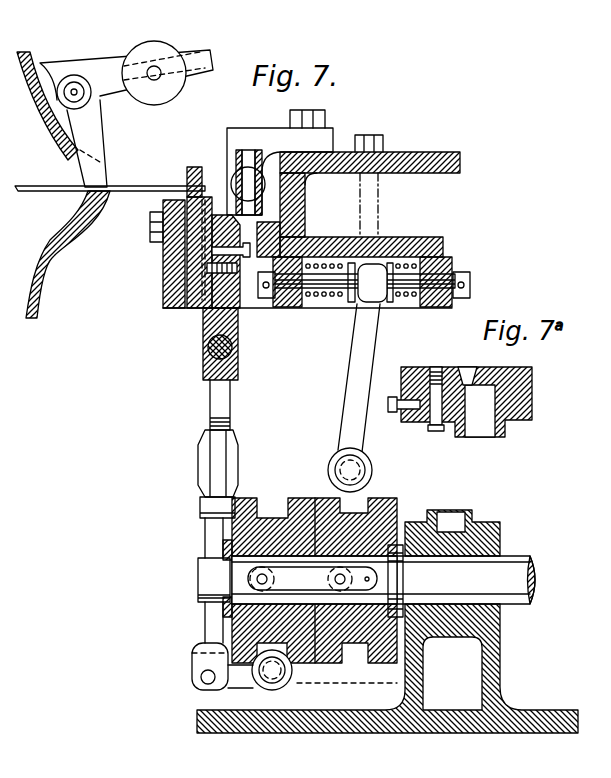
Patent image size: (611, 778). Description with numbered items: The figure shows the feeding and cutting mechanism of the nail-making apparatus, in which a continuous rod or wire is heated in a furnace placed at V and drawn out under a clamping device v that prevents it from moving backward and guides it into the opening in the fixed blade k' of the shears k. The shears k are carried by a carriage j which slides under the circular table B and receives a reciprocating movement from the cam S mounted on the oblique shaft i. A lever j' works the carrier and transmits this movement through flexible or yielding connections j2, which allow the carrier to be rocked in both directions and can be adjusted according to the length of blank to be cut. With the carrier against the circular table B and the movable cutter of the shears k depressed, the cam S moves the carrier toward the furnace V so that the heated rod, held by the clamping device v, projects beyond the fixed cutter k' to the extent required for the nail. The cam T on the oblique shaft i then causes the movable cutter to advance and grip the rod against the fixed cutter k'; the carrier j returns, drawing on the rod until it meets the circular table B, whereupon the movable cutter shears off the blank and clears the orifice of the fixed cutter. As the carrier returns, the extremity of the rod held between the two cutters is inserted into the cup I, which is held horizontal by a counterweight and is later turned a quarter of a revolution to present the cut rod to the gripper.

In FIG. 7, the furnace V is at (40, 145).
In FIG. 7, the clamping device v is at (126, 114).
In FIG. 7, the cup I is at (236, 162).
In FIG. 7, the fixed blade k' is at (204, 237).
In FIG. 7, the shears k is at (195, 254).
In FIG. 7, the circular table B is at (308, 210).
In FIG. 7, the carriage j is at (316, 292).
In FIG. 7A, the carriage j is at (460, 402).
In FIG. 7, the flexible or yielding connections j2 is at (326, 300).
In FIG. 7, the lever j' is at (354, 398).
In FIG. 7, the cam T is at (310, 578).
In FIG. 7, the cam S is at (387, 621).
In FIG. 7, the oblique shaft i is at (383, 581).